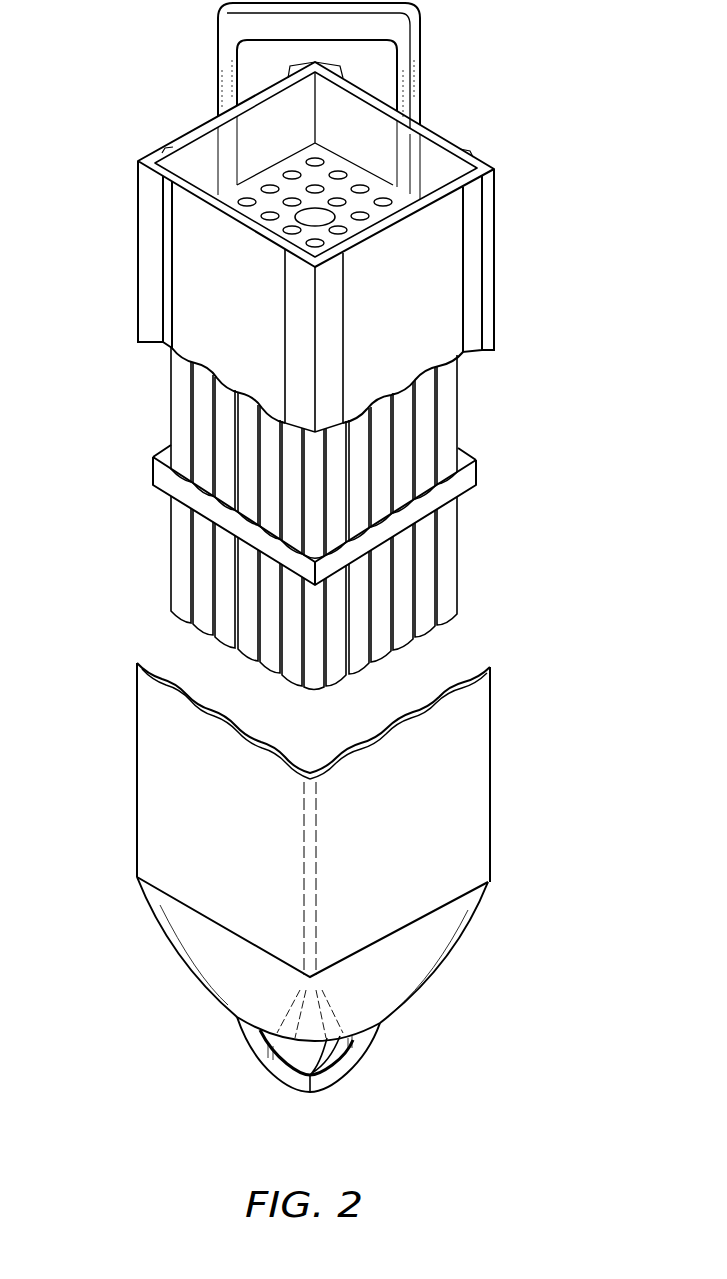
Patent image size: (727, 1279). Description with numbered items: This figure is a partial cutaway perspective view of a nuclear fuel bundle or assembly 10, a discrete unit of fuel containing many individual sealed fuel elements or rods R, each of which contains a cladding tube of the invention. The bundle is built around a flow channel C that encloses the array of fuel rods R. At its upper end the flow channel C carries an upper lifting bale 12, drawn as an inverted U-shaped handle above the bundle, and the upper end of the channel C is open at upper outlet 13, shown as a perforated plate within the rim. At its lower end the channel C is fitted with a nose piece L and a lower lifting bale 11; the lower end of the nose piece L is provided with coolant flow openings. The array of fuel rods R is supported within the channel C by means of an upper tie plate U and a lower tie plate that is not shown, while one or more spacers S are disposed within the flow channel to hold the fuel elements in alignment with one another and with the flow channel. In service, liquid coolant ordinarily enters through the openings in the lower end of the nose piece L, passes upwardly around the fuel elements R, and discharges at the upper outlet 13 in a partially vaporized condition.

The nuclear fuel bundle 10 is at (517, 212).
The upper lifting bale 12 is at (410, 40).
The upper outlet 13 is at (317, 217).
The upper tie plate U is at (460, 157).
The fuel elements or rods R is at (170, 402).
The spacer S is at (473, 483).
The flow channel C is at (173, 777).
The nose piece L is at (410, 950).
The lower lifting bale 11 is at (352, 1070).